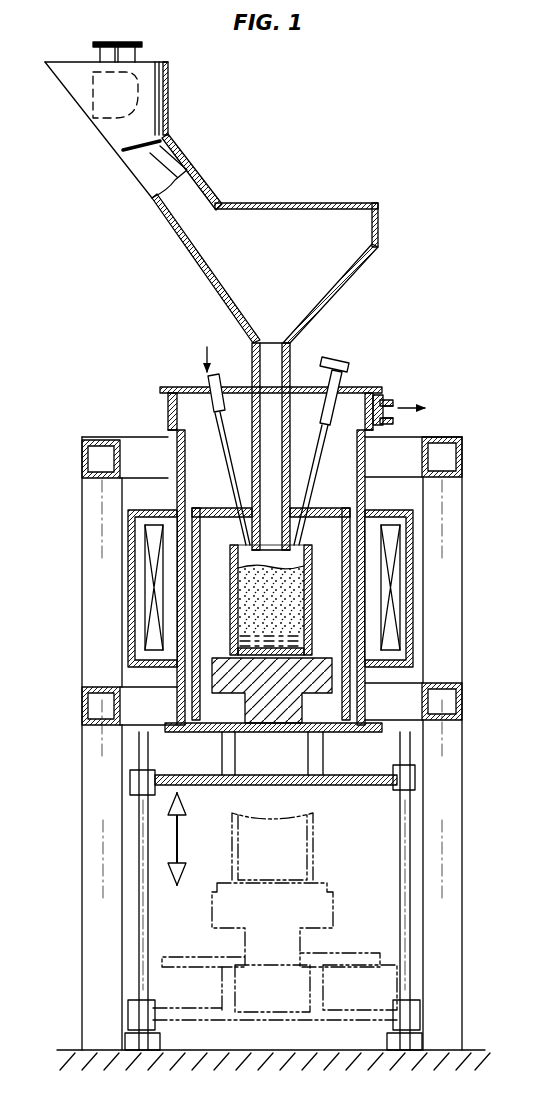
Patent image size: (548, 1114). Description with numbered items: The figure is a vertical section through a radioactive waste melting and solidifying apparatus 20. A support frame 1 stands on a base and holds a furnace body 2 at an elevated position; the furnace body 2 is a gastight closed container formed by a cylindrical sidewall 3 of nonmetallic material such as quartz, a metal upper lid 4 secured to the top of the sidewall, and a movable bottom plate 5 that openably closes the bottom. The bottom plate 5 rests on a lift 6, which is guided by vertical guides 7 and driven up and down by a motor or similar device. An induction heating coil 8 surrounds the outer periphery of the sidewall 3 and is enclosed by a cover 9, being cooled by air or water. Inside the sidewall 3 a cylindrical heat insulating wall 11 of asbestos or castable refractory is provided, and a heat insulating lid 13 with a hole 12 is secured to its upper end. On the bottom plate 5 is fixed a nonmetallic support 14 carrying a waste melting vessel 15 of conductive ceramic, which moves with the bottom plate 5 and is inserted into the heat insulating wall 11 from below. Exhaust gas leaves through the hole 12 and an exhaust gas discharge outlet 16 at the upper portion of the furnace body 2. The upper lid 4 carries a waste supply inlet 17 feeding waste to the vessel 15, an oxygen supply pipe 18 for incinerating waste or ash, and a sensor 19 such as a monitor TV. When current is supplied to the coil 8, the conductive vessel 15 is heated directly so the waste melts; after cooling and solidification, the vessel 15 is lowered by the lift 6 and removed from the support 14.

The support frame 1 is at (455, 878).
The furnace body 2 is at (170, 455).
The cylindrical sidewall 3 is at (177, 490).
The upper lid 4 is at (172, 388).
The bottom plate 5 is at (355, 733).
The lift 6 is at (358, 786).
The vertical guides 7 is at (400, 897).
The induction heating coil 8 is at (143, 612).
The cover 9 is at (128, 565).
The heat insulating wall 11 is at (357, 578).
The hole 12 is at (305, 513).
The heat insulating lid 13 is at (333, 506).
The support 14 is at (217, 685).
The waste melting vessel 15 is at (312, 630).
The exhaust gas discharge outlet 16 is at (392, 394).
The waste supply inlet 17 is at (290, 355).
The oxygen supply pipe 18 is at (215, 378).
The sensor 19 is at (347, 365).
The radioactive waste melting and solidifying apparatus 20 is at (472, 440).